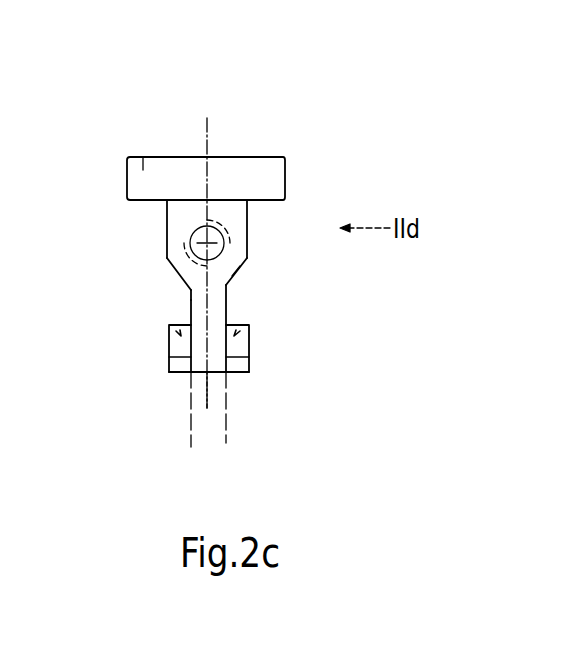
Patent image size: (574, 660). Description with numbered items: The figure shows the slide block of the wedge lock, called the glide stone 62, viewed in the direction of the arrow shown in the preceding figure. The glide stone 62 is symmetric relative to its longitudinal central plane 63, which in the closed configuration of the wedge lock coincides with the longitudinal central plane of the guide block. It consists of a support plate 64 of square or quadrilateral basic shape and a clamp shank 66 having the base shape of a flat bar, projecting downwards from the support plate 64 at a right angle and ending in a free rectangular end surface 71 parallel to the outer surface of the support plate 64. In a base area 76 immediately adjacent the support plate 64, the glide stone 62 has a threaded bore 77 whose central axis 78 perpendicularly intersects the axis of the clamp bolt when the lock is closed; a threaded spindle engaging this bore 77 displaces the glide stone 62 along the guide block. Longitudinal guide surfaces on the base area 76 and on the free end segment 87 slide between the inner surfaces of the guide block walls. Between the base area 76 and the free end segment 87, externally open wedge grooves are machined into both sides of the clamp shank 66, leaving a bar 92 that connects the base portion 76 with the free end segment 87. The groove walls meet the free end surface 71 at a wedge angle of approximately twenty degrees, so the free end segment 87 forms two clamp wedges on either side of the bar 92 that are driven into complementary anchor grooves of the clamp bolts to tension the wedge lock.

The glide stone 62 is at (228, 157).
The longitudinal central plane 63 is at (207, 130).
The support plate 64 is at (143, 157).
The clamp shank 66 is at (234, 270).
The free end surface 71 is at (219, 373).
The base area 76 is at (247, 220).
The threaded bore 77 is at (247, 242).
The central axis 78 is at (195, 221).
The free end segment 87 is at (172, 365).
The bar 92 is at (189, 293).